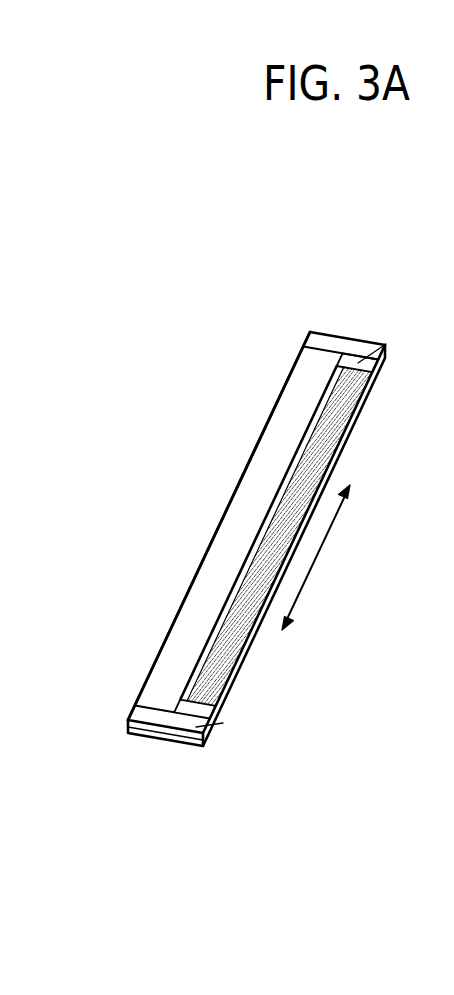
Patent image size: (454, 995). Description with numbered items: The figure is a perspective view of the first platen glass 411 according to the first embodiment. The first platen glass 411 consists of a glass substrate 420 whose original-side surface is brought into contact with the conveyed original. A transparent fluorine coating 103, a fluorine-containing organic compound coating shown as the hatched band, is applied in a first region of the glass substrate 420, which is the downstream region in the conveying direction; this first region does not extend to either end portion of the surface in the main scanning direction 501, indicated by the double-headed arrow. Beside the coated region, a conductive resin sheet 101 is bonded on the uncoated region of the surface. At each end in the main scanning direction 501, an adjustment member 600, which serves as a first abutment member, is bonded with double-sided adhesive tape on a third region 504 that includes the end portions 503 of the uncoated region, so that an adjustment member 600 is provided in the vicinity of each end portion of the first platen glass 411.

The first platen glass 411 is at (288, 314).
The glass substrate 420 is at (168, 633).
The conductive resin sheet 101 is at (240, 515).
The transparent fluorine coating 103 is at (322, 444).
The main scanning direction 501 is at (319, 557).
The end portions 503 is at (344, 348).
The third region 504 is at (360, 348).
The adjustment member 600 is at (386, 344).